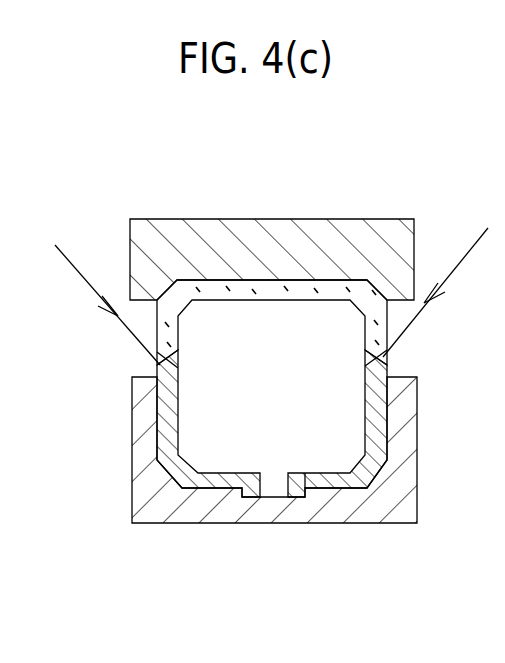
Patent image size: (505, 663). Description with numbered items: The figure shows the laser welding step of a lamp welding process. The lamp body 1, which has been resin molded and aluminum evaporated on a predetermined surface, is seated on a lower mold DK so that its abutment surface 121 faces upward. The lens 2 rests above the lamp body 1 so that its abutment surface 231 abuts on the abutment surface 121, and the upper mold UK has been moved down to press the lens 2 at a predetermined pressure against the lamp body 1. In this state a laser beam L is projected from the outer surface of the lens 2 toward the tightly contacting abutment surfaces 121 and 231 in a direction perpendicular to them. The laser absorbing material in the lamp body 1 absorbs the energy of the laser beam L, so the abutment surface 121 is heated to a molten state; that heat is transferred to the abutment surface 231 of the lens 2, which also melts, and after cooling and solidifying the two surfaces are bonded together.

The upper mold UK is at (327, 232).
The lower mold DK is at (367, 512).
The lens 2 is at (237, 219).
The lamp body 1 is at (194, 490).
The abutment surface 121 is at (163, 372).
The abutment surface 231 is at (168, 358).
The laser beam L is at (270, 296).